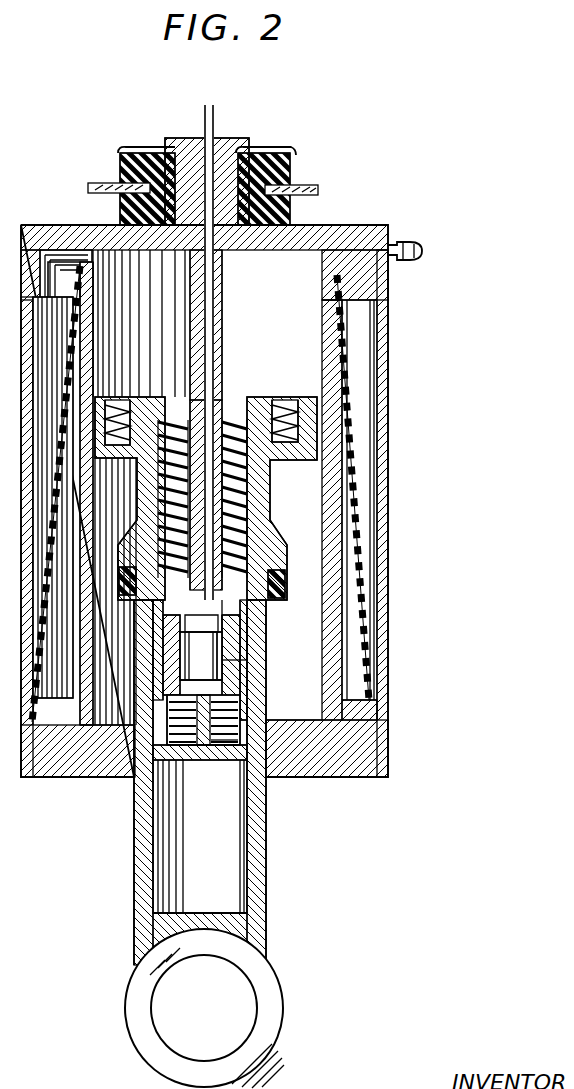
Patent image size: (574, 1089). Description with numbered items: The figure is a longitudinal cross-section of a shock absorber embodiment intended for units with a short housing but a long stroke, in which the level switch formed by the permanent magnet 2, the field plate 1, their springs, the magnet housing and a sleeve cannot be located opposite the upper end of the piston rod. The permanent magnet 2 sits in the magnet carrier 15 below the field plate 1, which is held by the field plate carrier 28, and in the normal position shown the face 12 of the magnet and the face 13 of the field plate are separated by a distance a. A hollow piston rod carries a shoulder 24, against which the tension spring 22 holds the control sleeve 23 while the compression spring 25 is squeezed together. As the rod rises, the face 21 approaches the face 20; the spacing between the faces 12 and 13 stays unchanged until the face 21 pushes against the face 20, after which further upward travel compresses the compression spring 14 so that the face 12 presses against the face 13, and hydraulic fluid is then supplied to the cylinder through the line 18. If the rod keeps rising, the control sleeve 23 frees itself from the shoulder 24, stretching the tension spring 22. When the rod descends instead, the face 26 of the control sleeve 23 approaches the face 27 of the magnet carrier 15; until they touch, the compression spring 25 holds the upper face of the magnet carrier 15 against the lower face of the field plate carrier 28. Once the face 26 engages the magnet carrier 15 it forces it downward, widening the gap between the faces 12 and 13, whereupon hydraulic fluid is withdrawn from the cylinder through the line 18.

The field plate 1 is at (200, 620).
The permanent magnet 2 is at (207, 669).
The face 12 is at (76, 640).
The face 13 is at (238, 636).
The compression spring 14 is at (196, 692).
The magnet carrier 15 is at (240, 690).
The line 18 is at (370, 253).
The face 20 is at (185, 750).
The face 21 is at (200, 756).
The tension spring 22 is at (265, 440).
The control sleeve 23 is at (150, 714).
The shoulder 24 is at (243, 607).
The compression spring 25 is at (240, 738).
The face 26 is at (196, 625).
The face 27 is at (242, 668).
The field plate carrier 28 is at (250, 560).